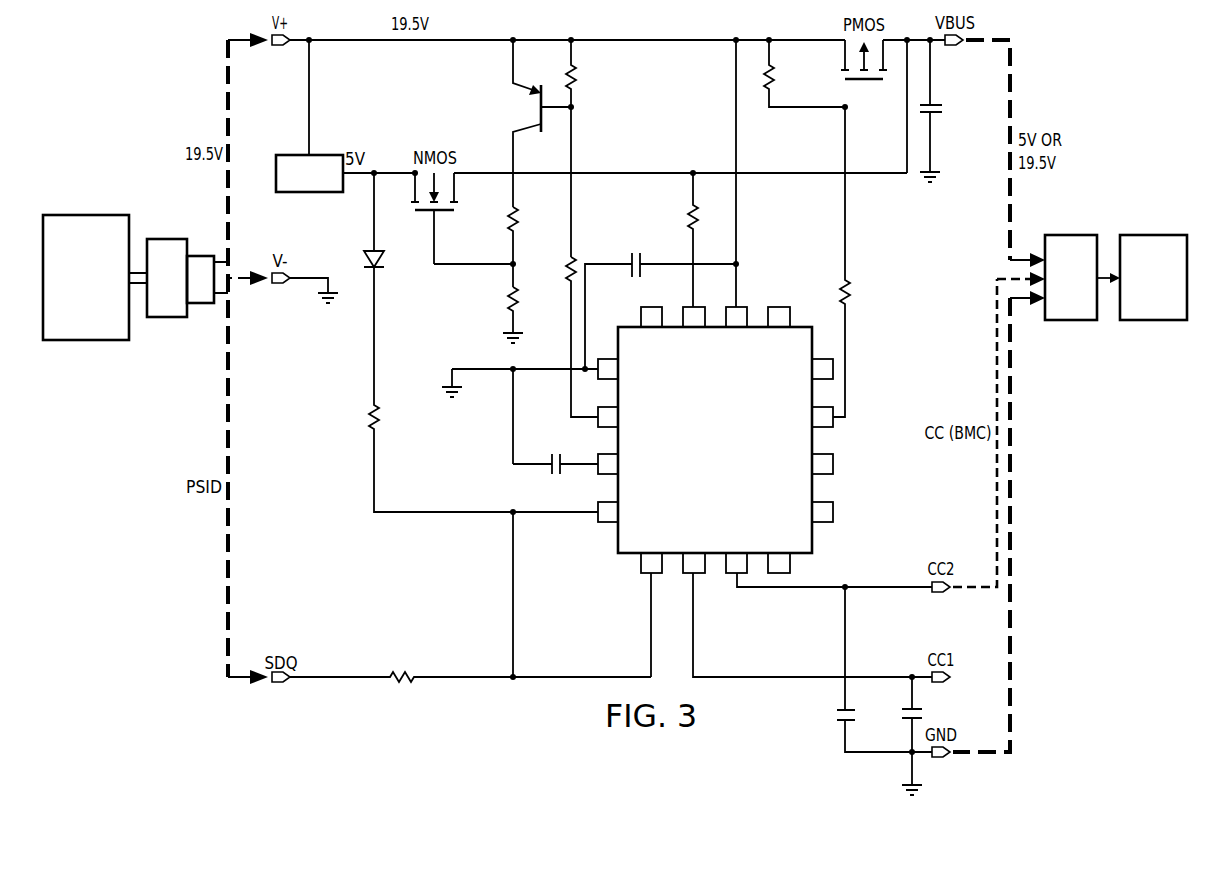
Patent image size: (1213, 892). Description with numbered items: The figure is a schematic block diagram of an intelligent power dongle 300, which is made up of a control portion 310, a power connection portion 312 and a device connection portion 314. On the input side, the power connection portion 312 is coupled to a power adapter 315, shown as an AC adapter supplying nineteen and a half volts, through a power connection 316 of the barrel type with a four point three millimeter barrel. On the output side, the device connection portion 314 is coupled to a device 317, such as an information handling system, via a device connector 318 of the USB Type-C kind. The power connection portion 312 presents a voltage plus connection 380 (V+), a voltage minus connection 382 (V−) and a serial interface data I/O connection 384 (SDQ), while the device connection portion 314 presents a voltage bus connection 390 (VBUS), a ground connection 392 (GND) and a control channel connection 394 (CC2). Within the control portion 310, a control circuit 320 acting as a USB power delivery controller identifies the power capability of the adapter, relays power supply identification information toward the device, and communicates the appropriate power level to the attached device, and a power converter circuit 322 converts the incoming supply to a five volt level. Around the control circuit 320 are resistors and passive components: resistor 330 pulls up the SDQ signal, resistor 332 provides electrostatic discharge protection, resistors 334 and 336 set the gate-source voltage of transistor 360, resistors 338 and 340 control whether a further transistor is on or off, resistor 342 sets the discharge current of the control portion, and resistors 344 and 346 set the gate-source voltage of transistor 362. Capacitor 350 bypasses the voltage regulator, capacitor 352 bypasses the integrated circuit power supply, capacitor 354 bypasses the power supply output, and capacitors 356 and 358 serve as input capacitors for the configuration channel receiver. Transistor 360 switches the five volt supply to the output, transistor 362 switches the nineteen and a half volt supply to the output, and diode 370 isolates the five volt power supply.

The intelligent power dongle 300 is at (128, 442).
The control portion 310 is at (1042, 681).
The power connection portion 312 is at (120, 150).
The device connection portion 314 is at (1114, 170).
The power adapter 315 is at (86, 214).
The power connection 316 is at (165, 238).
The device 317 is at (1152, 234).
The device connector 318 is at (1071, 234).
The control circuit 320 is at (697, 456).
The power converter circuit 322 is at (290, 154).
The resistor 330 is at (370, 418).
The resistor 332 is at (400, 683).
The resistor 334 is at (508, 222).
The resistor 336 is at (508, 302).
The resistor 338 is at (575, 80).
The resistor 340 is at (568, 268).
The resistor 342 is at (689, 212).
The resistor 344 is at (773, 80).
The resistor 346 is at (851, 292).
The capacitor 350 is at (555, 453).
The capacitor 352 is at (634, 257).
The capacitor 354 is at (940, 108).
The capacitor 356 is at (838, 716).
The capacitor 358 is at (922, 712).
The transistor 360 is at (420, 214).
The transistor 362 is at (868, 83).
The diode 370 is at (363, 260).
The voltage plus connection 380 is at (275, 48).
The voltage minus connection 382 is at (277, 287).
The serial interface data I/O connection 384 is at (276, 686).
The voltage bus connection 390 is at (952, 48).
The ground connection 392 is at (940, 760).
The control channel connection 394 is at (940, 595).